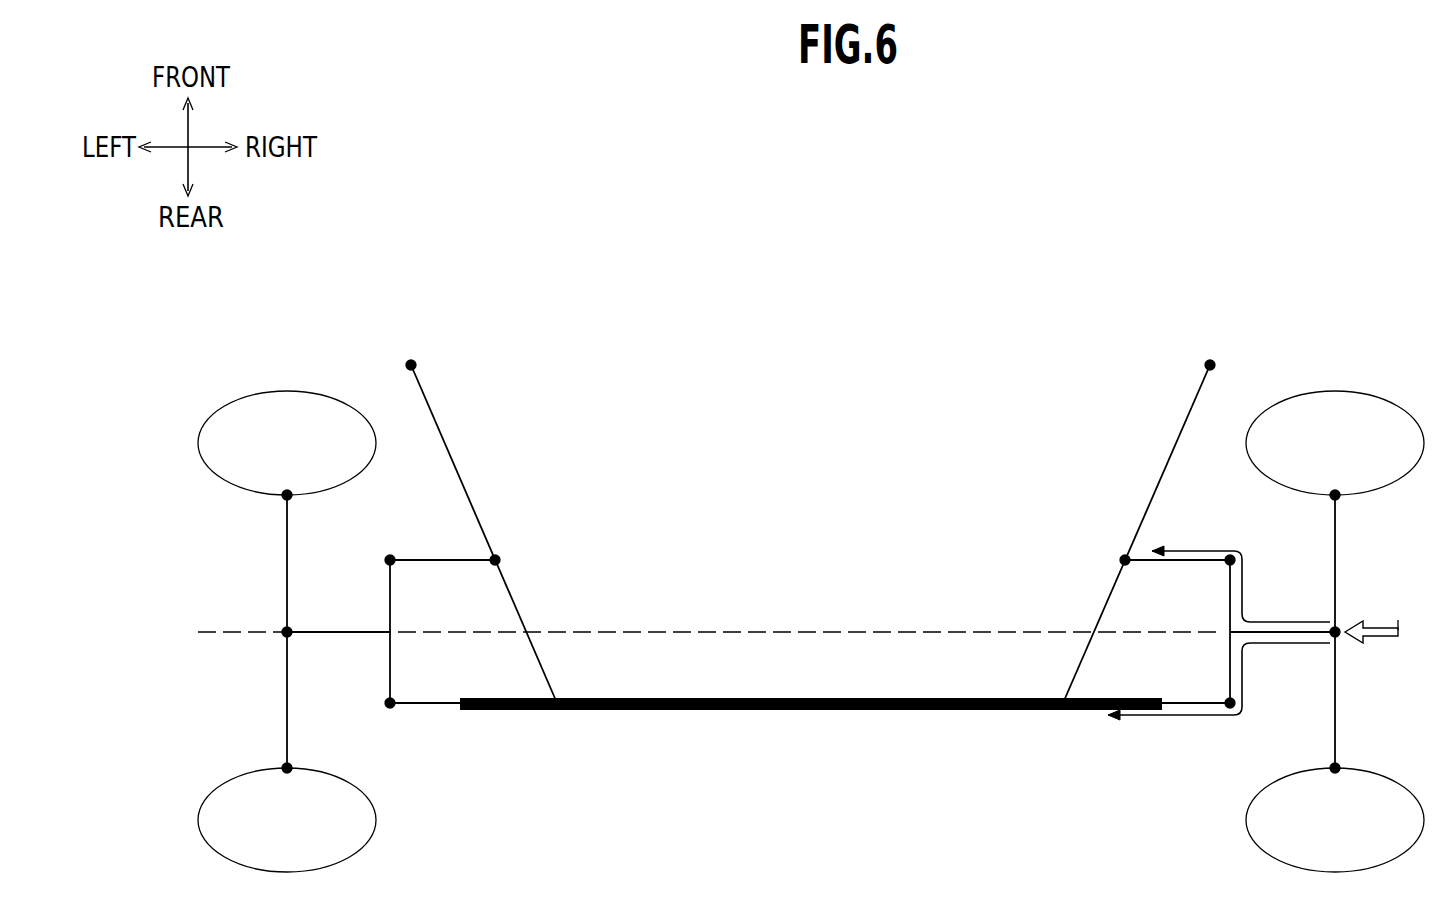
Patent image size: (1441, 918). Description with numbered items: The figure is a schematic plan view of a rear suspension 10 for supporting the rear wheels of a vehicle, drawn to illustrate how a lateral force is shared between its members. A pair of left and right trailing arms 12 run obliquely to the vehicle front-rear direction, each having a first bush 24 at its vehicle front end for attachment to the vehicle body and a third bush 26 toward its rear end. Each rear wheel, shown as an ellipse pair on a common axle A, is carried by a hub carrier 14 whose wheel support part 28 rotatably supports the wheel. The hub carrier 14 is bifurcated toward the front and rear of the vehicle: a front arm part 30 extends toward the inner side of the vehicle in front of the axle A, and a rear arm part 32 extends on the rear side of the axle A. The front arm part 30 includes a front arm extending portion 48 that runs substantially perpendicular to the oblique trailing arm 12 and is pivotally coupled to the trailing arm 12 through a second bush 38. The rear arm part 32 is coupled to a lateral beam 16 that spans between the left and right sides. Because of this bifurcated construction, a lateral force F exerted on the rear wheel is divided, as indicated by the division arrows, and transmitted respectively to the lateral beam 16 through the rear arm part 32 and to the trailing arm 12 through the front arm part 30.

The rear suspension 10 is at (911, 200).
The trailing arm 12 is at (472, 468).
The hub carrier 14 is at (368, 586).
The lateral beam 16 is at (785, 722).
The first bush 24 is at (408, 364).
The third bush 26 is at (560, 712).
The wheel support part 28 is at (275, 650).
The front arm part 30 is at (441, 538).
The rear arm part 32 is at (441, 727).
The second bush 38 is at (498, 559).
The front arm extending portion 48 is at (458, 563).
The axle A is at (1398, 620).
The lateral force F is at (1383, 630).